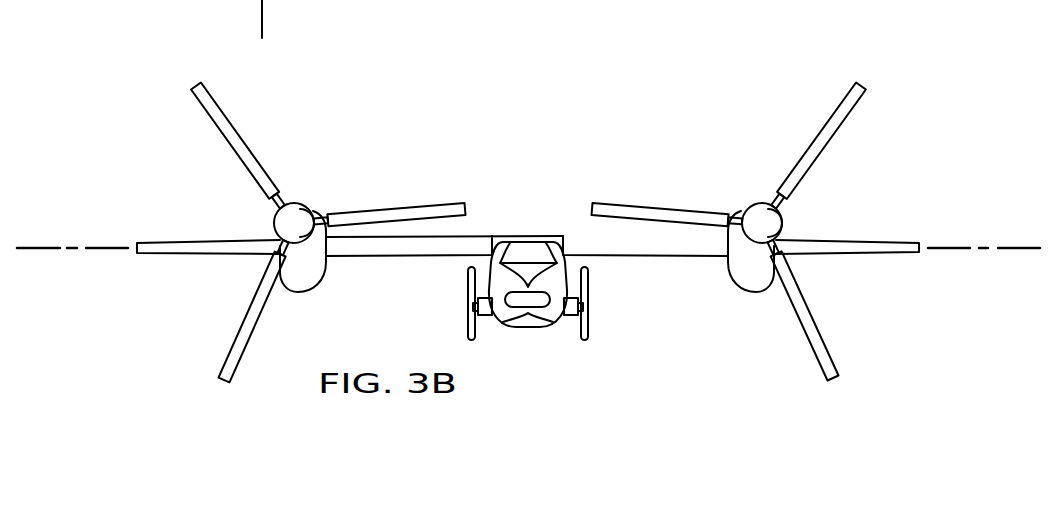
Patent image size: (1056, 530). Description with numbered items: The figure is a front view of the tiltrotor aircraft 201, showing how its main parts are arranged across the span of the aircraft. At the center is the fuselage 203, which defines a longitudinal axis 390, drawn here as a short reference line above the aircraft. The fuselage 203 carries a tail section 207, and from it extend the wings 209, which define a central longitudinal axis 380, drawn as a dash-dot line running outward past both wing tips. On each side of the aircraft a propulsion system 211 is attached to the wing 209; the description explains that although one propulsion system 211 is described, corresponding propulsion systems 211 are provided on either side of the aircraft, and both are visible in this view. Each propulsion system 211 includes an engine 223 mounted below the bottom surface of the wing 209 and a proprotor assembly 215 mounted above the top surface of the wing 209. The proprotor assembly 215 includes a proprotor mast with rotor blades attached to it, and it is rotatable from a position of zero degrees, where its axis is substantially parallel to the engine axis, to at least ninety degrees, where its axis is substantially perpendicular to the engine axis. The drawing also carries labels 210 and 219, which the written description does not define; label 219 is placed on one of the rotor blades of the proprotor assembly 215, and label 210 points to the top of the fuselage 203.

The tiltrotor aircraft 201 is at (786, 60).
The fuselage 203 is at (528, 280).
The tail section 207 is at (590, 325).
The wing 209 is at (410, 258).
The fuselage top 210 is at (528, 242).
The propulsion system 211 is at (747, 199).
The proprotor assembly 215 is at (783, 222).
The rotor blade 219 is at (815, 133).
The engine 223 is at (758, 293).
The central longitudinal axis 380 is at (1017, 248).
The longitudinal axis 390 is at (262, 22).